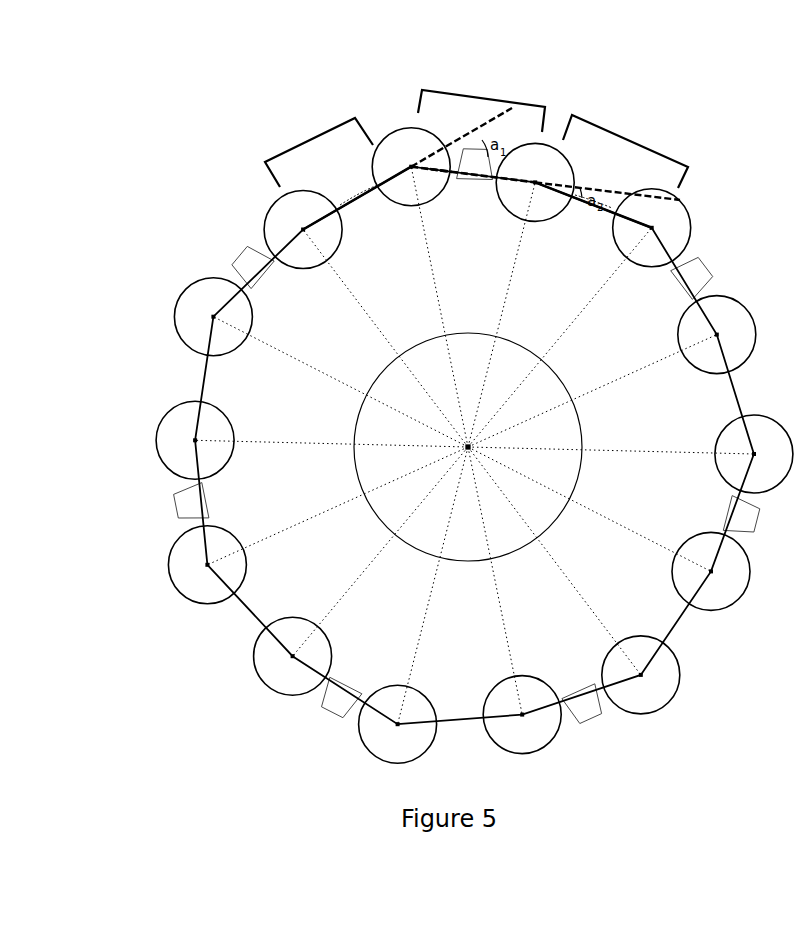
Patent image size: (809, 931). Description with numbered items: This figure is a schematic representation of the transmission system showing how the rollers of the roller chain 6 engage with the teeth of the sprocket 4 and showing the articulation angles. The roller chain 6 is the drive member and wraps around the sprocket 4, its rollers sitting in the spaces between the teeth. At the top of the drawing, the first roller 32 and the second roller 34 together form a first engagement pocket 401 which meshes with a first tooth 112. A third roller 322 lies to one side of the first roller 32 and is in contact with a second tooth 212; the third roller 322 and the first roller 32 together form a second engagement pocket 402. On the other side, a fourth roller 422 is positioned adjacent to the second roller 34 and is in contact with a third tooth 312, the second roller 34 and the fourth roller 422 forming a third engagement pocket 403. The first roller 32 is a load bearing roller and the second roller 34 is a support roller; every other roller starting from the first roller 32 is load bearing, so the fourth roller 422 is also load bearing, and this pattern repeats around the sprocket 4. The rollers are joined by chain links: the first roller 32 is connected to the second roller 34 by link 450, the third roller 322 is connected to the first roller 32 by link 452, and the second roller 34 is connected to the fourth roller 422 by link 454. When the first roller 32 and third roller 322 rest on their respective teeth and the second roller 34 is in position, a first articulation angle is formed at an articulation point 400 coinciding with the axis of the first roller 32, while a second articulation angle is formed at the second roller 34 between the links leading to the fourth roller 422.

The sprocket 4 is at (291, 499).
The roller chain 6 is at (163, 447).
The first roller 32 is at (397, 161).
The second roller 34 is at (522, 176).
The first tooth 112 is at (473, 158).
The second tooth 212 is at (335, 234).
The third tooth 312 is at (607, 242).
The third roller 322 is at (303, 230).
The articulation point 400 is at (407, 163).
The first engagement pocket 401 is at (481, 100).
The second engagement pocket 402 is at (319, 147).
The third engagement pocket 403 is at (625, 144).
The fourth roller 422 is at (652, 228).
The link 450 is at (441, 172).
The link 452 is at (360, 197).
The link 454 is at (593, 200).